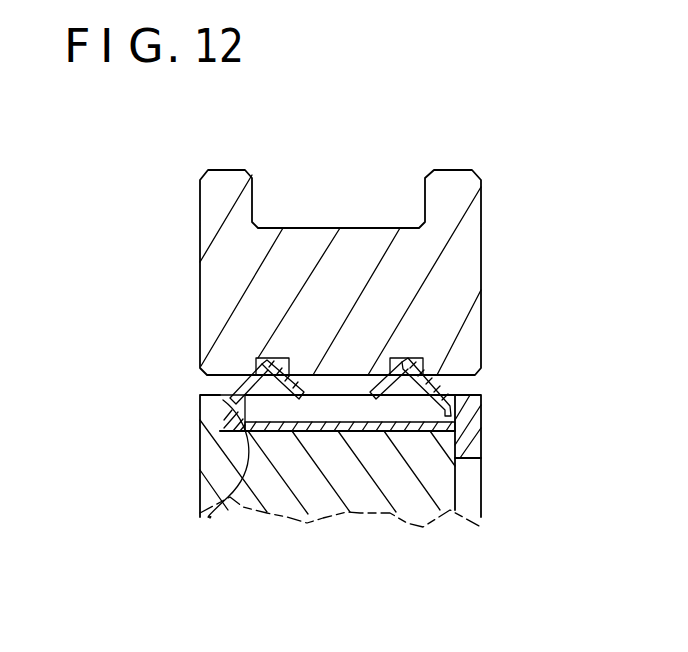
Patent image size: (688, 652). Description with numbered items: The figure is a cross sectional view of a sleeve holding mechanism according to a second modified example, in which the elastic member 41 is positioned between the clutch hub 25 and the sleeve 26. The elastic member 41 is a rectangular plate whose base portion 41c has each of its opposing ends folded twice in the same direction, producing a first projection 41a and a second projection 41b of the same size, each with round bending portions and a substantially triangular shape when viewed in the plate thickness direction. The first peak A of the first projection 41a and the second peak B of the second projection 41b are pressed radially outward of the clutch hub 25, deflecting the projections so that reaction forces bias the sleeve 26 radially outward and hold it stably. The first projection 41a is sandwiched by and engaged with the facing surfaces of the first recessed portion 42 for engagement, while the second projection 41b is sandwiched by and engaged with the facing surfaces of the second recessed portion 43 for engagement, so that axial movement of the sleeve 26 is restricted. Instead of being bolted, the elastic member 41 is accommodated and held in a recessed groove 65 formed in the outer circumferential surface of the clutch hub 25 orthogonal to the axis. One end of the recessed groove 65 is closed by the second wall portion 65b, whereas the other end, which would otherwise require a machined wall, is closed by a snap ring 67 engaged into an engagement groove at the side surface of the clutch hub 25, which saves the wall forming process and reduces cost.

The sleeve 26 is at (212, 201).
The second recessed portion for engagement 43 is at (258, 362).
The first recessed portion for engagement 42 is at (393, 365).
The elastic member 41 is at (490, 366).
The first projection 41a is at (434, 378).
The second projection 41b is at (224, 390).
The base portion 41c is at (388, 432).
The recessed groove 65 is at (216, 506).
The second wall portion 65b is at (212, 410).
The snap ring 67 is at (478, 404).
The clutch hub 25 is at (398, 512).
The first peak A is at (407, 358).
The second peak B is at (272, 358).